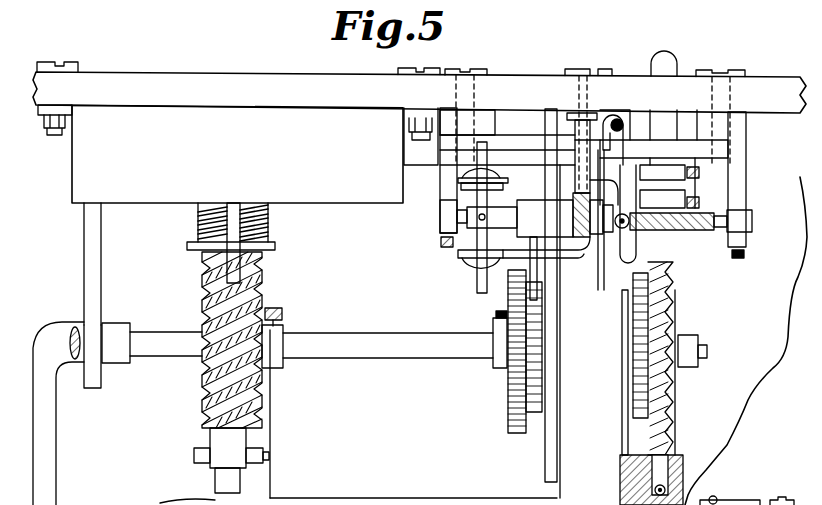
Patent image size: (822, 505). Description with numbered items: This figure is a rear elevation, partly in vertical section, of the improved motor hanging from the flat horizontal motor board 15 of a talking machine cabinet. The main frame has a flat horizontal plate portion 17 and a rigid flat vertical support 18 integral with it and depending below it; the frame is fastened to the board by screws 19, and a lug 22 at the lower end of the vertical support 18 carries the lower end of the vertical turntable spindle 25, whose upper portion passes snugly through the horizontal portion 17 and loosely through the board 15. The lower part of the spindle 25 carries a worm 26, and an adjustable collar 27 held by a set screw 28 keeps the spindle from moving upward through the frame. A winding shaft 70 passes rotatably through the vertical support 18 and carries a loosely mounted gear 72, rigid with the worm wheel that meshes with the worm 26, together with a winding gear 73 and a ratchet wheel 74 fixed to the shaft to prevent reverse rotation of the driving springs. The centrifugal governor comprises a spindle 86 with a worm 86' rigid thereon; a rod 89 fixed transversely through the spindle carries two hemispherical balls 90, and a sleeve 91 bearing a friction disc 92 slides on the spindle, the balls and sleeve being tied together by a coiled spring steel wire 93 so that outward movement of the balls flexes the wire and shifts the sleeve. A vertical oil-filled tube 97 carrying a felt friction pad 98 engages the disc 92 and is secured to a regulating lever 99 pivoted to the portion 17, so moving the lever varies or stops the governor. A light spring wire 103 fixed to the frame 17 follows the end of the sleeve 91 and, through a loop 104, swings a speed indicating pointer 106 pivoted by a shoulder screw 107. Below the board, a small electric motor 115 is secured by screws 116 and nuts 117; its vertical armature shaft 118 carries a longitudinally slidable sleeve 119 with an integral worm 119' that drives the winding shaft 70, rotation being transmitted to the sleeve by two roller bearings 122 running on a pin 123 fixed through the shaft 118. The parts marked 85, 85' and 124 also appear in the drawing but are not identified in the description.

The motor board 15 is at (190, 88).
The screws 116 is at (63, 70).
The screws 19 is at (474, 66).
The turntable spindle 25 is at (666, 68).
The nuts 117 is at (50, 128).
The electric motor 115 is at (237, 154).
The rod 85' is at (111, 264).
The housing 85 is at (81, 413).
The spring 124 is at (268, 226).
The worm 119' is at (205, 340).
The winding shaft 70 is at (378, 347).
The sleeve 119 is at (204, 445).
The armature shaft 118 is at (218, 484).
The roller bearings 122 is at (194, 455).
The pin 123 is at (268, 456).
The governor spindle 86 is at (426, 177).
The horizontal portion 17 is at (700, 153).
The set screw 28 is at (700, 172).
The adjustable collar 27 is at (686, 181).
The worm 86' is at (729, 201).
The spring steel wire 103 is at (660, 232).
The rod 89 is at (477, 285).
The hemispherical balls 90 is at (490, 165).
The sleeve 91 is at (535, 246).
The spring steel wire 93 is at (600, 250).
The friction disc 92 is at (604, 282).
The friction pad 98 is at (606, 292).
The tube 97 is at (583, 135).
The regulating lever 99 is at (572, 112).
The loop 104 is at (620, 119).
The speed indicating pointer 106 is at (624, 126).
The pivot shoulder screw 107 is at (782, 500).
The winding gear 73 is at (508, 390).
The ratchet wheel 74 is at (532, 412).
The vertical support 18 is at (567, 303).
The gear 72 is at (638, 420).
The worm 26 is at (672, 308).
The lug 22 is at (681, 470).